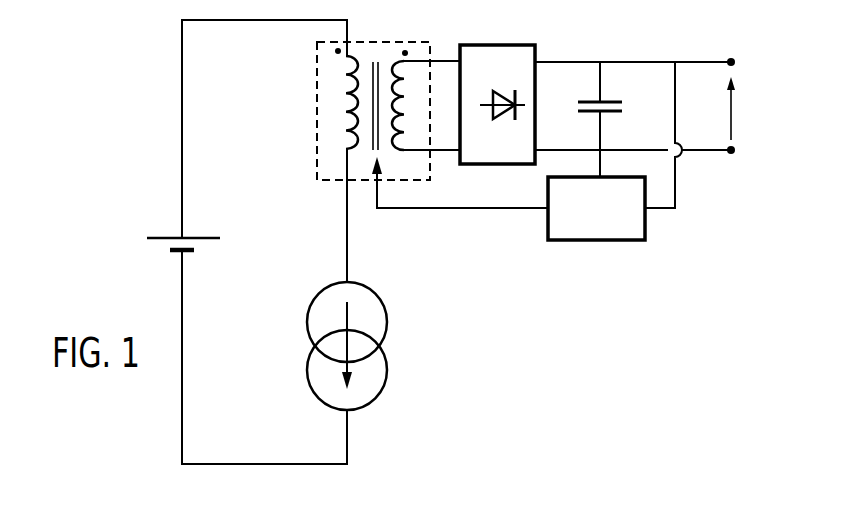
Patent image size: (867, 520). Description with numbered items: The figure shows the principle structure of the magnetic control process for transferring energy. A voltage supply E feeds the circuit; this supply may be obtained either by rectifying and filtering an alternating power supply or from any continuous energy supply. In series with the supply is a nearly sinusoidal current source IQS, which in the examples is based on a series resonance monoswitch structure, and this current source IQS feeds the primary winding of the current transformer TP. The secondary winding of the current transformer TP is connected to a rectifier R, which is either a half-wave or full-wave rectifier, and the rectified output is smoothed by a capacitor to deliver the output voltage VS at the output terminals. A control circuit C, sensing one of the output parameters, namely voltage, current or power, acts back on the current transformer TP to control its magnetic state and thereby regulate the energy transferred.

The voltage supply E is at (183, 229).
The current source IQS is at (369, 346).
The current transformer TP is at (355, 111).
The rectifier R is at (497, 104).
The output voltage VS is at (749, 106).
The control circuit C is at (508, 198).